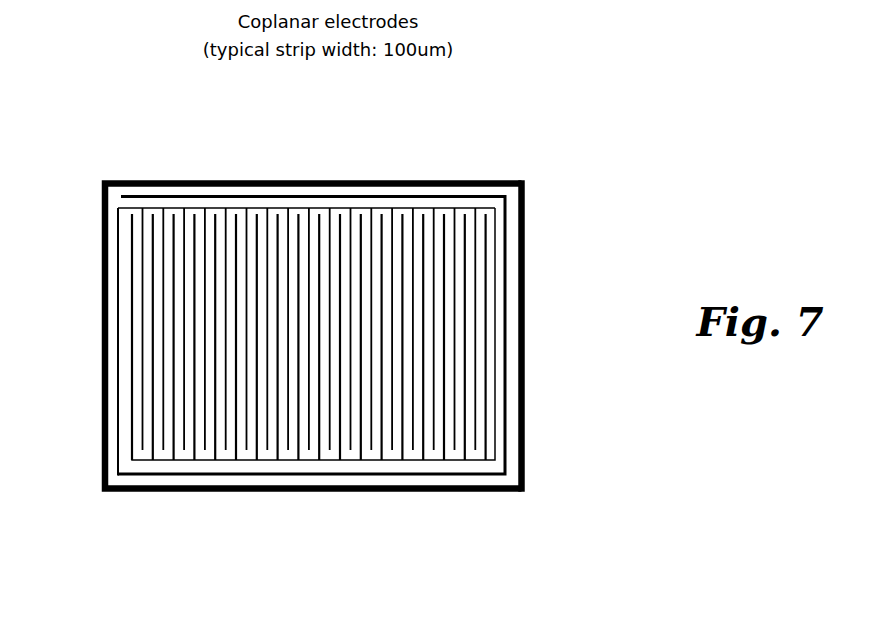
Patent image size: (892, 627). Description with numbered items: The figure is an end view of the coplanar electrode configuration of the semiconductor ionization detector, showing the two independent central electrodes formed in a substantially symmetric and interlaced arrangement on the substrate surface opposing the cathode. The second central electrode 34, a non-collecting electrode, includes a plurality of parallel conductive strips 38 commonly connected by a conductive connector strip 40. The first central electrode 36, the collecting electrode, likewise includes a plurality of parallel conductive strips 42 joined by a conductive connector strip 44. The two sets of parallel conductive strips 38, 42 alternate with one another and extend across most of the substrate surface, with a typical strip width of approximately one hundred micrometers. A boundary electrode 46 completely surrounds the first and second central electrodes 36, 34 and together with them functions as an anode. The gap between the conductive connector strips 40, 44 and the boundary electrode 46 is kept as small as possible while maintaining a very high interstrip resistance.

The second central electrode 34 is at (493, 184).
The first central electrode 36 is at (138, 200).
The parallel conductive strips 38 is at (236, 214).
The conductive connector strip 40 is at (508, 333).
The parallel conductive strips 42 is at (246, 450).
The conductive connector strip 44 is at (120, 305).
The boundary electrode 46 is at (523, 255).